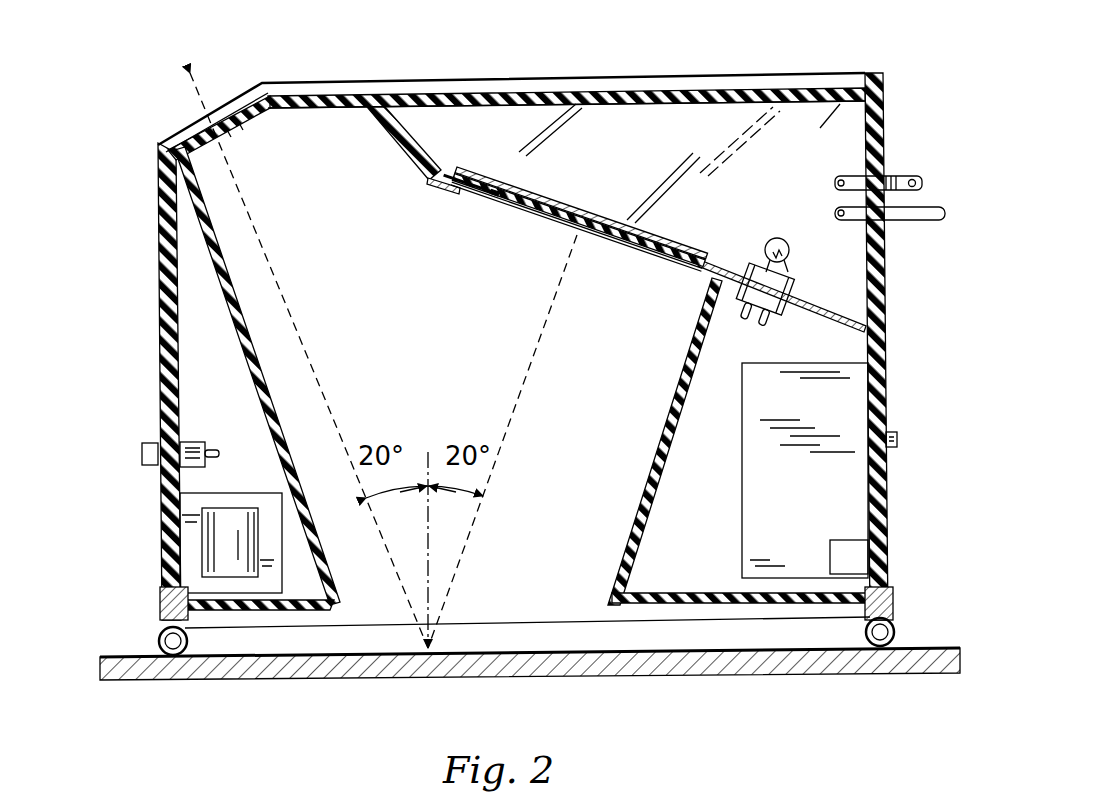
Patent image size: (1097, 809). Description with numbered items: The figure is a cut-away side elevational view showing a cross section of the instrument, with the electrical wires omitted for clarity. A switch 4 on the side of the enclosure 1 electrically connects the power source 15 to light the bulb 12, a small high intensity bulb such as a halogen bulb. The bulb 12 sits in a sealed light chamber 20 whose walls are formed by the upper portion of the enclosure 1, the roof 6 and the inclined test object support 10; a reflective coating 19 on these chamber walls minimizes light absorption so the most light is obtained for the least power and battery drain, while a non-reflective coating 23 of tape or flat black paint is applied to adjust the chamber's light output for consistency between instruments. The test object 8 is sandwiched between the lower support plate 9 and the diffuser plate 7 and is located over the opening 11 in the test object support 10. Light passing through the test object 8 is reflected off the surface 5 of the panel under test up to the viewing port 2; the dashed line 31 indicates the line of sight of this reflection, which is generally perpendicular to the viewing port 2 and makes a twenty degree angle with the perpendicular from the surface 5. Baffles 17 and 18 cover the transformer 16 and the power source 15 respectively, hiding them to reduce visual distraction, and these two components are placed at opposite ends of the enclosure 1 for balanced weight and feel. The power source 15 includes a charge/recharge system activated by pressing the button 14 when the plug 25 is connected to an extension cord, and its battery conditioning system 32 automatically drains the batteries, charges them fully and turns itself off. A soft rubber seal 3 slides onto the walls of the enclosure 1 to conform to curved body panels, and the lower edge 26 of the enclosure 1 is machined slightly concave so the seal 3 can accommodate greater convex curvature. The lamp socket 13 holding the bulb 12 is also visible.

The enclosure 1 is at (162, 332).
The viewing port 2 is at (215, 125).
The seal 3 is at (158, 640).
The switch 4 is at (145, 452).
The surface 5 is at (940, 650).
The roof 6 is at (720, 92).
The diffuser plate 7 is at (605, 142).
The test object 8 is at (600, 157).
The lower support plate 9 is at (572, 239).
The test object support 10 is at (412, 160).
The opening 11 is at (465, 231).
The bulb 12 is at (790, 255).
The lamp socket 13 is at (792, 285).
The button 14 is at (898, 440).
The power source 15 is at (775, 515).
The transformer 16 is at (228, 536).
The baffle 17 is at (326, 548).
The baffle 18 is at (655, 462).
The reflective coating 19 is at (503, 152).
The light chamber 20 is at (820, 128).
The non-reflective coating 23 is at (420, 128).
The plug 25 is at (905, 150).
The lower edge 26 is at (575, 619).
The line of sight 31 is at (318, 345).
The battery conditioning system 32 is at (849, 557).